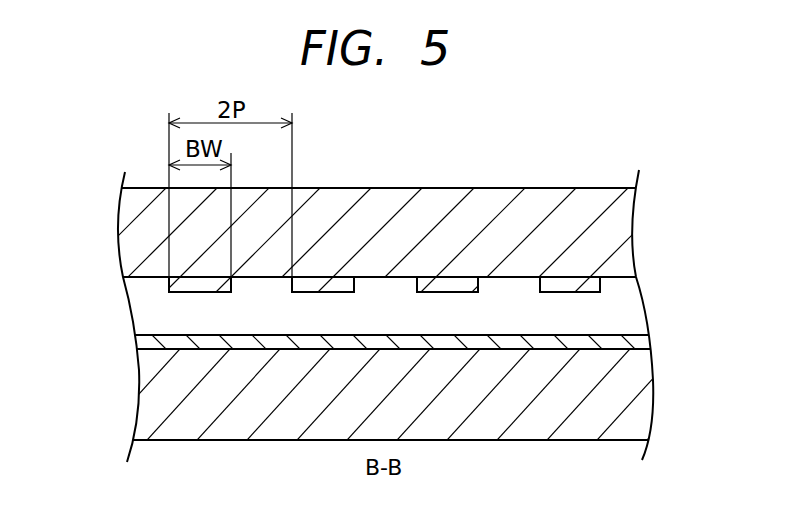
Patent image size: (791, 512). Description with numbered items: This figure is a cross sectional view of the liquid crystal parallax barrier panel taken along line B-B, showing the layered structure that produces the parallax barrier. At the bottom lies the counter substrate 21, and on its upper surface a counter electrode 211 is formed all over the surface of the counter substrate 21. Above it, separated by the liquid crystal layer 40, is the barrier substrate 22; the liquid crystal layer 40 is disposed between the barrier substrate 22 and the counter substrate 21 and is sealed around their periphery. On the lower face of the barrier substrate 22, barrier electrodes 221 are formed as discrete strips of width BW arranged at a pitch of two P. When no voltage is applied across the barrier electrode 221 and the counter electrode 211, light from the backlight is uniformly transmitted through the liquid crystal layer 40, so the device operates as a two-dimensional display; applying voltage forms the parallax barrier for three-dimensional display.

The liquid crystal layer 40 is at (143, 311).
The barrier substrate 22 is at (610, 231).
The barrier electrode 221 is at (573, 285).
The counter electrode 211 is at (580, 343).
The counter substrate 21 is at (610, 400).